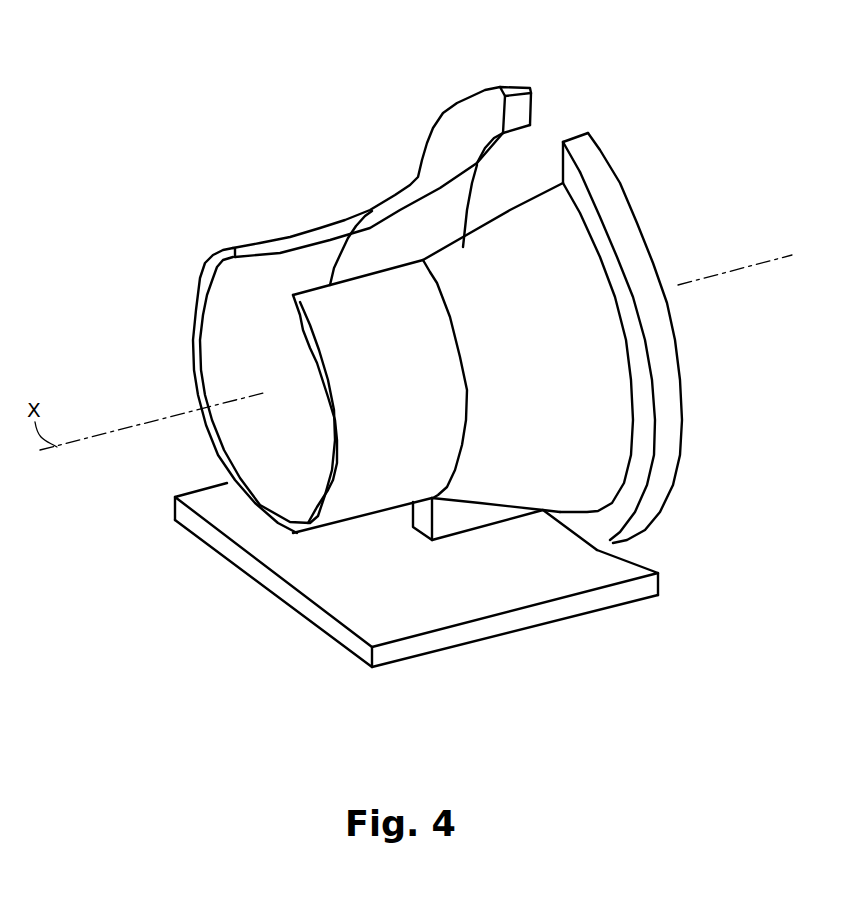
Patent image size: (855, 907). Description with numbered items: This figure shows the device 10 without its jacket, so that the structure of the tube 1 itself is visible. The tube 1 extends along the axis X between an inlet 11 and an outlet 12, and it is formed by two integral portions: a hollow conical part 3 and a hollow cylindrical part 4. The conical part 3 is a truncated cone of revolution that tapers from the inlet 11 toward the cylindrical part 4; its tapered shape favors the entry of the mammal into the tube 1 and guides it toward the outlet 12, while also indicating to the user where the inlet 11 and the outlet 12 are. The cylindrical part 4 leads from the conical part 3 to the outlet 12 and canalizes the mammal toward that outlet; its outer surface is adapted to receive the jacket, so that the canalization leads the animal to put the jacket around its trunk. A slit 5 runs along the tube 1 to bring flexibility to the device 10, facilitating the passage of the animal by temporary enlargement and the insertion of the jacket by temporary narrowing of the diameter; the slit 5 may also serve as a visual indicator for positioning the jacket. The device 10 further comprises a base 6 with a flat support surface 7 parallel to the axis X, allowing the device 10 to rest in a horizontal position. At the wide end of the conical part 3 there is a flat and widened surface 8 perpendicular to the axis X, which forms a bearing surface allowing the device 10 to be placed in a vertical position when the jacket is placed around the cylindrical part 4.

The tube 1 is at (572, 228).
The hollow conical part 3 is at (573, 447).
The hollow cylindrical part 4 is at (365, 300).
The slit 5 is at (262, 280).
The base 6 is at (403, 520).
The flat support surface 7 is at (463, 647).
The flat and widened surface 8 is at (682, 463).
The device 10 is at (347, 103).
The inlet 11 is at (655, 222).
The outlet 12 is at (247, 337).